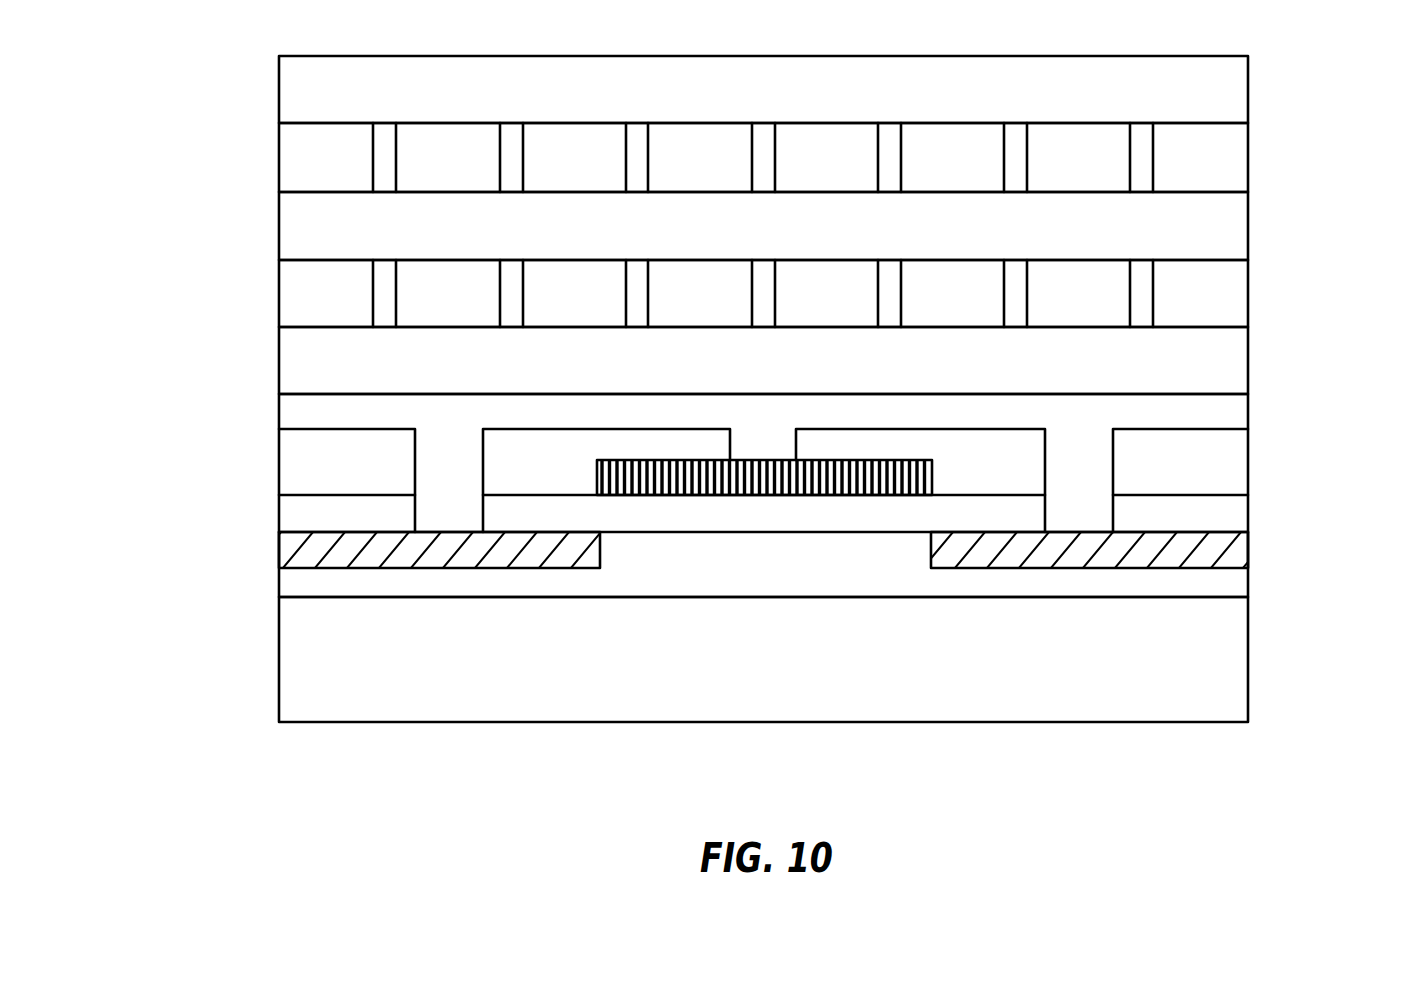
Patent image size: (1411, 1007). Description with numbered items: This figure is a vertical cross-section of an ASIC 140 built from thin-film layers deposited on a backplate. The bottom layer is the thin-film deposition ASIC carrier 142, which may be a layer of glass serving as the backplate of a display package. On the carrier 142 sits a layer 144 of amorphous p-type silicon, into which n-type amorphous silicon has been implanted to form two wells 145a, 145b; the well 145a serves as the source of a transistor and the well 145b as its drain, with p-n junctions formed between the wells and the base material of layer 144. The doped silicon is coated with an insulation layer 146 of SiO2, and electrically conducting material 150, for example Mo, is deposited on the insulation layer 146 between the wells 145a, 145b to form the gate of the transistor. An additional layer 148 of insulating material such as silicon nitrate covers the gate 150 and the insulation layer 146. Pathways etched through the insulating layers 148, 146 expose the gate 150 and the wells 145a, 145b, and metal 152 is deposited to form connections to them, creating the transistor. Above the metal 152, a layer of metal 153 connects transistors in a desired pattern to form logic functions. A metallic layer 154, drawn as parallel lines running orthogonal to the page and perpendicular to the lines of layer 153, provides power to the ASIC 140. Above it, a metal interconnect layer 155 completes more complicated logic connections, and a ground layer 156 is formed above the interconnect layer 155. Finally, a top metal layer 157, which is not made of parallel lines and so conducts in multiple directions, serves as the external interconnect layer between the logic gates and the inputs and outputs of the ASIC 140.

The ASIC 140 is at (148, 55).
The thin-film deposition ASIC carrier 142 is at (1215, 690).
The layer of amorphous p-type silicon 144 is at (1215, 580).
The well 145a is at (292, 561).
The well 145b is at (1215, 554).
The insulation layer 146 is at (508, 516).
The layer of insulating material 148 is at (507, 468).
The electrically conducting material 150 is at (773, 497).
The metal 152 is at (293, 412).
The layer of metal 153 is at (293, 362).
The metallic layer 154 is at (293, 295).
The metal interconnect layer 155 is at (293, 228).
The ground layer 156 is at (293, 158).
The top metal layer 157 is at (293, 90).